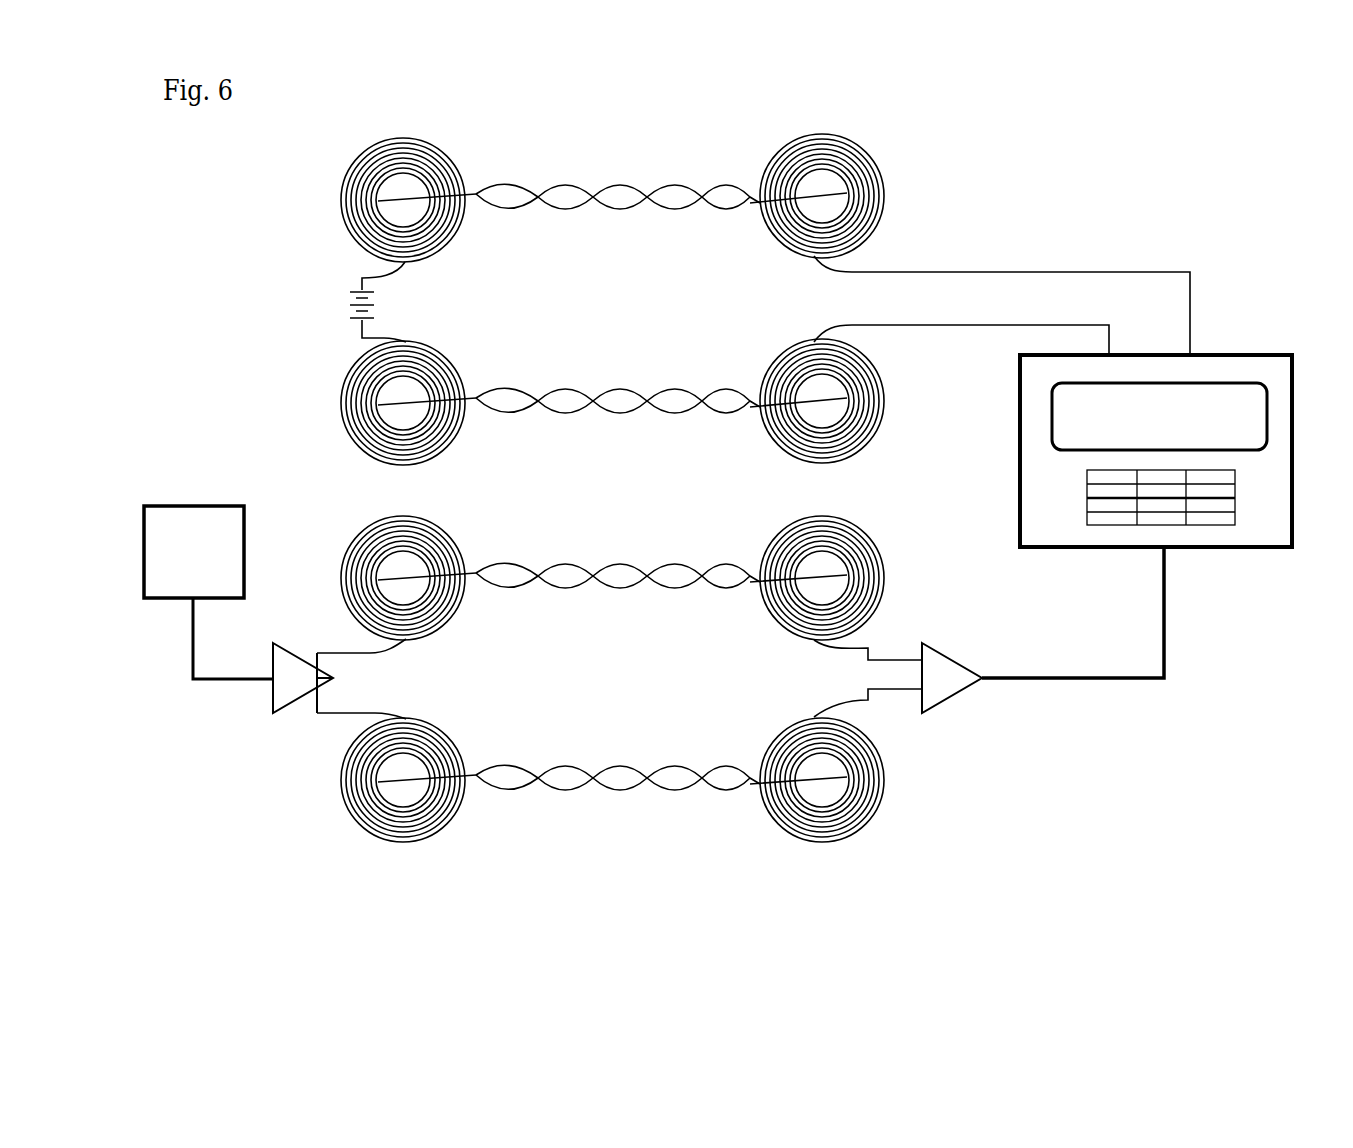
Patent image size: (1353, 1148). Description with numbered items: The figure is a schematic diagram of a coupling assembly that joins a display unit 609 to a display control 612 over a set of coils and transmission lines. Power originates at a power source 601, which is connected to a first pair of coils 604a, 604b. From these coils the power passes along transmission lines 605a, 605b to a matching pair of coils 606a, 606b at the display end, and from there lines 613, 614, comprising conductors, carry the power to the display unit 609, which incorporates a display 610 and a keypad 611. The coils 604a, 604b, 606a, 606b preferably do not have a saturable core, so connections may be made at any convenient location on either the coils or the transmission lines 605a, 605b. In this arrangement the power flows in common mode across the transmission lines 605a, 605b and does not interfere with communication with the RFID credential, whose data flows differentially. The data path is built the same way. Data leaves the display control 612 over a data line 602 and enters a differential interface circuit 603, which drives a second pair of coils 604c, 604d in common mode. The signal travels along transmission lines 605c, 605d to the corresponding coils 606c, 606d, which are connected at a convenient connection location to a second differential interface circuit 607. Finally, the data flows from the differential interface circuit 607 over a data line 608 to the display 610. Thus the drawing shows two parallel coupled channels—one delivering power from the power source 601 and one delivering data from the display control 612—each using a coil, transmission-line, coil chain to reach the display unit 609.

The power source 601 is at (340, 306).
The data line 602 is at (236, 686).
The differential interface circuit 603 is at (279, 722).
The coil 604a is at (341, 180).
The coil 604b is at (340, 425).
The coil 604c is at (341, 554).
The coil 604d is at (341, 800).
The transmission line 605a is at (632, 178).
The transmission line 605b is at (645, 422).
The transmission line 605c is at (632, 552).
The transmission line 605d is at (645, 800).
The coil 606a is at (895, 180).
The coil 606b is at (891, 426).
The coil 606c is at (895, 555).
The coil 606d is at (891, 803).
The differential interface circuit 607 is at (946, 652).
The data line 608 is at (1072, 687).
The display unit 609 is at (1090, 556).
The display 610 is at (1215, 378).
The keypad 611 is at (1200, 533).
The display control 612 is at (180, 498).
The line 613 is at (980, 264).
The line 614 is at (980, 317).